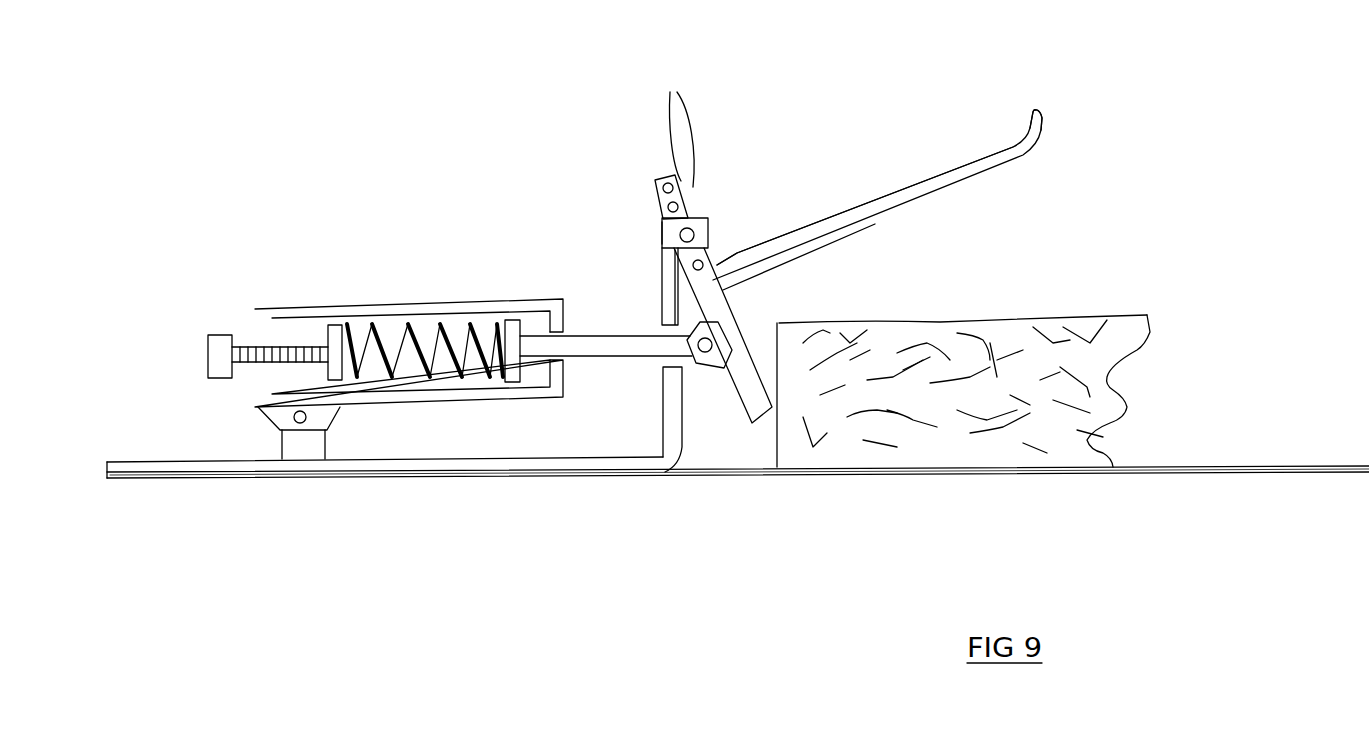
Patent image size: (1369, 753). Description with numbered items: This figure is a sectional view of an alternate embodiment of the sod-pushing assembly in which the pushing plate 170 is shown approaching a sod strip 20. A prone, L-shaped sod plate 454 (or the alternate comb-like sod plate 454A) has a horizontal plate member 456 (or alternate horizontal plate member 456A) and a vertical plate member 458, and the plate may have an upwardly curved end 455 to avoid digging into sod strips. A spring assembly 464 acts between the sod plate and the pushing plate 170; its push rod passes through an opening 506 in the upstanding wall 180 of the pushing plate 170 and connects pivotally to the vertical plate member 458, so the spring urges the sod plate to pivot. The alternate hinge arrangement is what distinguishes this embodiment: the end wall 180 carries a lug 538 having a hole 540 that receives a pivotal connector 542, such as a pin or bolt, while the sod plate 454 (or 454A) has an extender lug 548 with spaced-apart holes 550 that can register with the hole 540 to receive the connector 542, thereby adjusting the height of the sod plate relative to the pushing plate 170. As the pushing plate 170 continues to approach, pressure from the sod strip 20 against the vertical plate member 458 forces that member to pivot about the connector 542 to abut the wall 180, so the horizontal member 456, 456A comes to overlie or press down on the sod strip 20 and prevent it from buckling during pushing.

The sod strip 20 is at (946, 437).
The pushing plate 170 is at (505, 477).
The upstanding wall 180 is at (663, 393).
The sod plate 454 is at (877, 182).
The alternate sod plate 454A is at (908, 190).
The upwardly curved end 455 is at (1043, 118).
The horizontal plate member 456 is at (878, 257).
The alternate horizontal plate member 456A is at (875, 224).
The vertical plate member 458 is at (733, 317).
The spring assembly 464 is at (390, 299).
The opening 506 is at (660, 329).
The lug 538 is at (701, 204).
The hole 540 is at (703, 231).
The pivotal connector 542 is at (662, 231).
The extender lug 548 is at (815, 218).
The spaced-apart holes 550 is at (668, 124).